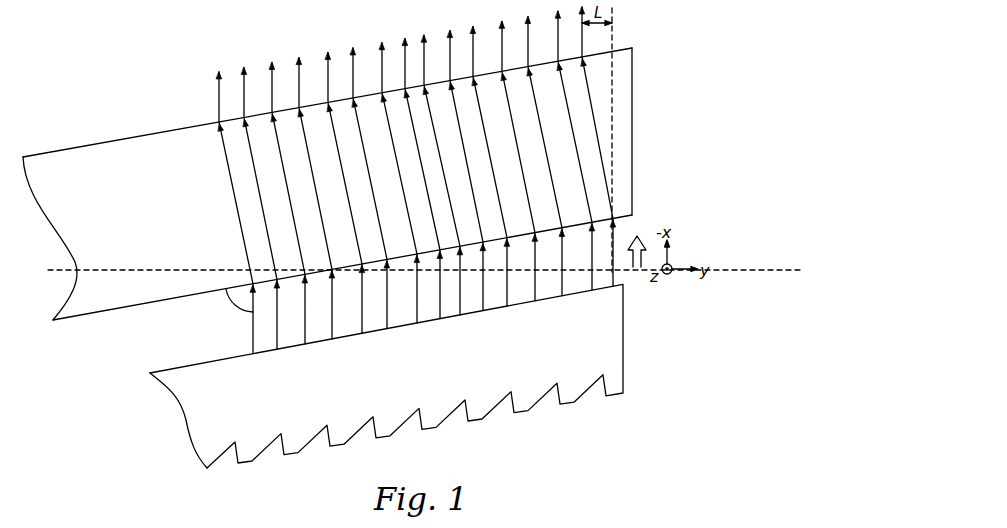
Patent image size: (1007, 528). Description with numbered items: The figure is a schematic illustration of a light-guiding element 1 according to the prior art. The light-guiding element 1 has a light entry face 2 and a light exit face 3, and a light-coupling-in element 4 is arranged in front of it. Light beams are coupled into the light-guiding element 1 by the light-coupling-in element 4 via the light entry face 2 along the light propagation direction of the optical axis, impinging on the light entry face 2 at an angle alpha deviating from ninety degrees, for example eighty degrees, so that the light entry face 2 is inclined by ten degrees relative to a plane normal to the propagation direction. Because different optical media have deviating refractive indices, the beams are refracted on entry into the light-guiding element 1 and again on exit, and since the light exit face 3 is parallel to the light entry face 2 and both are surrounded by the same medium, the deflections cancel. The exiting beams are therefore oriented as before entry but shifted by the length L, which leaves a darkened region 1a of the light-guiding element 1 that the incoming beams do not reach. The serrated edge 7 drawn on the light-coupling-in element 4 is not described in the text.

The light-guiding element 1 is at (382, 222).
The darkened region 1a is at (598, 51).
The light entry face 2 is at (147, 302).
The light exit face 3 is at (162, 128).
The light-coupling-in element 4 is at (353, 390).
The serrated sawtooth edge 7 is at (504, 410).